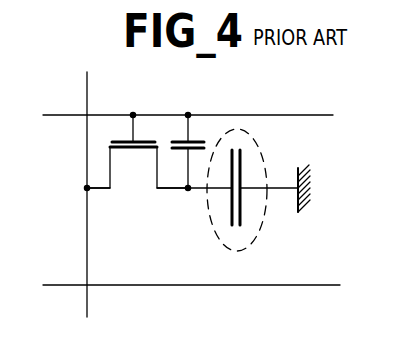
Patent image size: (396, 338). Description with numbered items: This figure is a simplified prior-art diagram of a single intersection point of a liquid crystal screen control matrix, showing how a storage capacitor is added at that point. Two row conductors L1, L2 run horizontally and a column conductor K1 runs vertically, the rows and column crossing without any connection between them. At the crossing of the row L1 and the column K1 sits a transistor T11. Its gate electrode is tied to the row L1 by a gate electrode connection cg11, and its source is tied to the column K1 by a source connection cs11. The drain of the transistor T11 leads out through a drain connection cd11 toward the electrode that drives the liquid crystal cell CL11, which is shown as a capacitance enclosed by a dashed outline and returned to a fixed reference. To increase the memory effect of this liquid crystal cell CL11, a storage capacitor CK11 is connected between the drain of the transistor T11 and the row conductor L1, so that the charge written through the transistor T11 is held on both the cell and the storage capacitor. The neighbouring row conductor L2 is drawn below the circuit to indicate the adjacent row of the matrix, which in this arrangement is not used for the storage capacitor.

The row conductor L1 is at (63, 114).
The row conductor L2 is at (70, 285).
The column conductor K1 is at (86, 307).
The gate electrode connection cg11 is at (134, 130).
The storage capacitor CK11 is at (198, 141).
The source connection cs11 is at (110, 170).
The transistor T11 is at (136, 150).
The drain connection cd11 is at (166, 189).
The liquid crystal cell CL11 is at (266, 214).